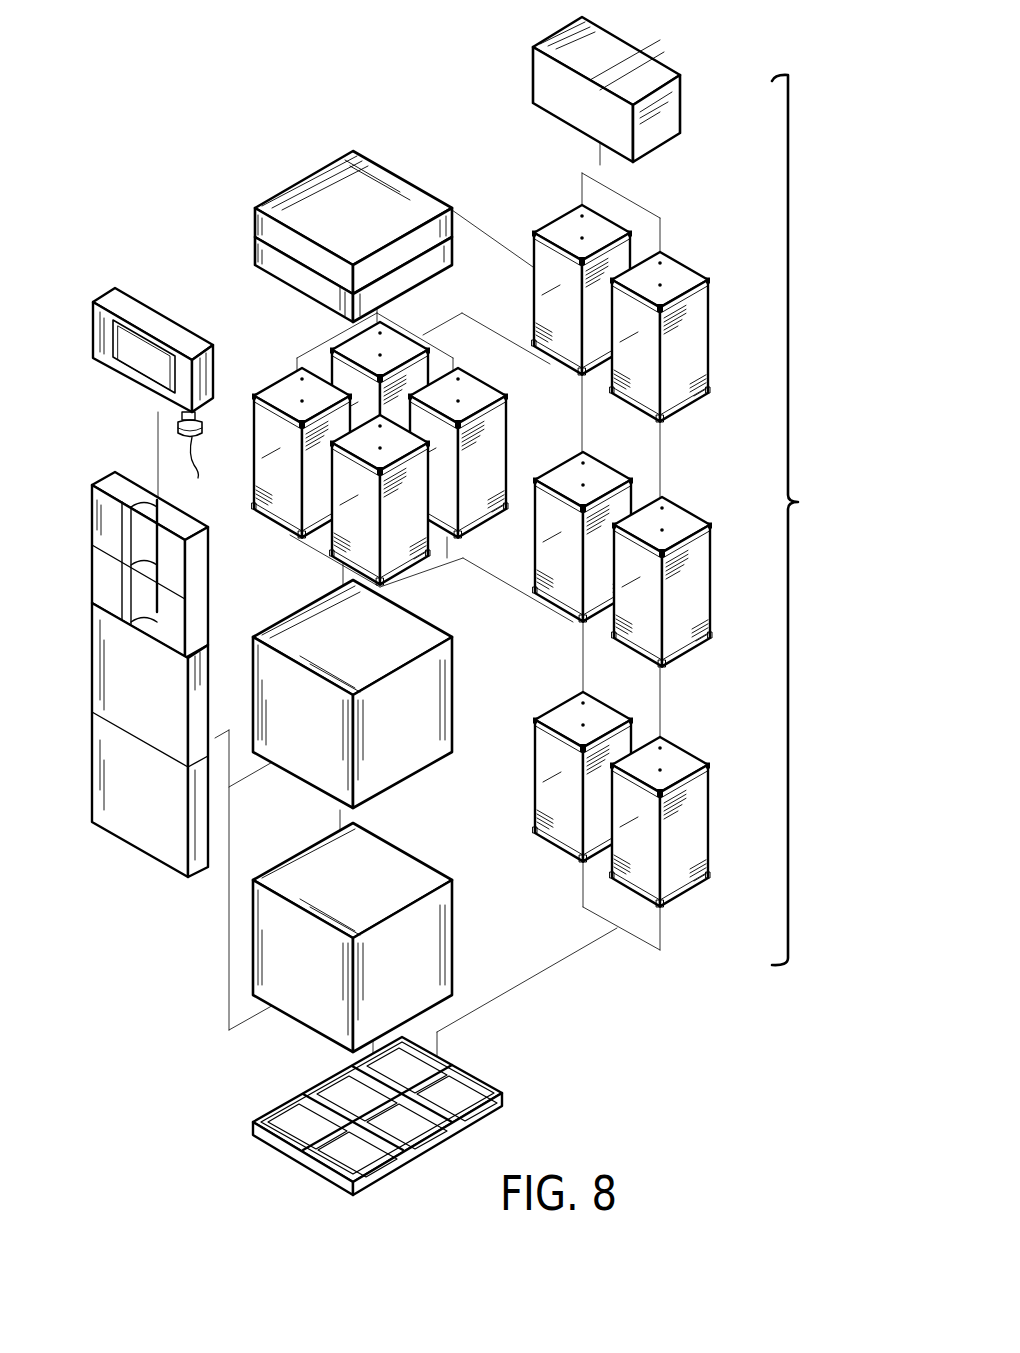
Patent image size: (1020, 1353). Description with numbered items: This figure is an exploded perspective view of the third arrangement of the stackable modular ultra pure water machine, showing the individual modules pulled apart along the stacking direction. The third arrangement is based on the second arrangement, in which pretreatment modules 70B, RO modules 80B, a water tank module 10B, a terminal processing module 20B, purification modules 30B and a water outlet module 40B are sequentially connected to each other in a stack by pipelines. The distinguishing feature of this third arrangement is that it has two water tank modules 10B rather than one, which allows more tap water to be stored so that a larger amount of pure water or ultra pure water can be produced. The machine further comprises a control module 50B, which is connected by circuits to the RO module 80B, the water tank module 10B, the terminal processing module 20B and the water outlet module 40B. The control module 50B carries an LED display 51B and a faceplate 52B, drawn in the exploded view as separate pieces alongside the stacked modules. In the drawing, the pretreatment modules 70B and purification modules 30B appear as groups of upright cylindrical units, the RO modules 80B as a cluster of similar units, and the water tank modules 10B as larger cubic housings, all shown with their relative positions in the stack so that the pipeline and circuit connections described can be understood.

The water tank module 10B is at (442, 960).
The terminal processing module 20B is at (314, 279).
The purification module 30B is at (685, 880).
The water outlet module 40B is at (212, 452).
The control module 50B is at (253, 216).
The LED display 51B is at (113, 368).
The faceplate 52B is at (107, 649).
The pretreatment module 70B is at (700, 349).
The RO module 80B is at (490, 452).